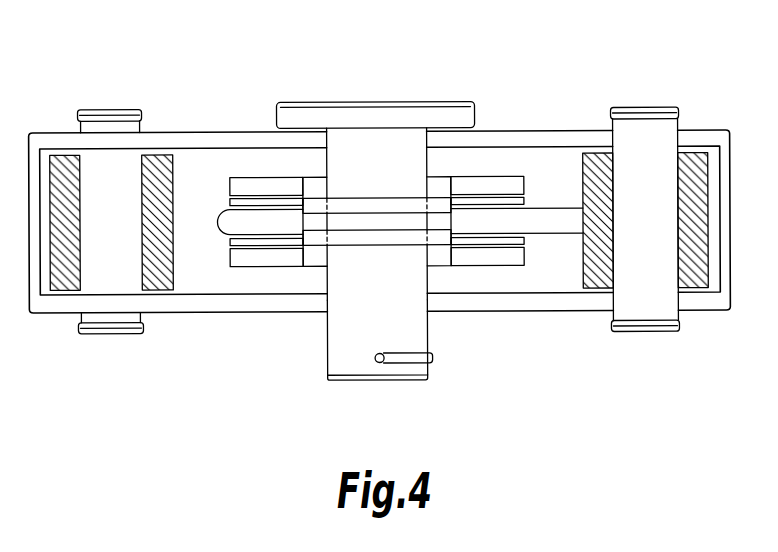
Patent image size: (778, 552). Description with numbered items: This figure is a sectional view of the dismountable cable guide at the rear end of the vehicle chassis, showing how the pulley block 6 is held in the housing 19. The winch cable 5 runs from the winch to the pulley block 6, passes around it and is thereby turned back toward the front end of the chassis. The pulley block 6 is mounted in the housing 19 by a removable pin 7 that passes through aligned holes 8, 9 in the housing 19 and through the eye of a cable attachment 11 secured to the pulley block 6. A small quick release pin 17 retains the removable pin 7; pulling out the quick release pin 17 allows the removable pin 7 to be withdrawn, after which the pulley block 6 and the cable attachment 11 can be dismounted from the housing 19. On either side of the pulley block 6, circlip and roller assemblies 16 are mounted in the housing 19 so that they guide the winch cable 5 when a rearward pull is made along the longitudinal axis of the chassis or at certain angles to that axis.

The winch cable 5 is at (550, 212).
The pulley block 6 is at (243, 183).
The removable pin 7 is at (348, 113).
The hole 8 is at (428, 137).
The hole 9 is at (430, 302).
The cable attachment 11 is at (317, 232).
The circlip and roller assembly 16 is at (104, 85).
The quick release pin 17 is at (400, 363).
The housing 19 is at (522, 140).